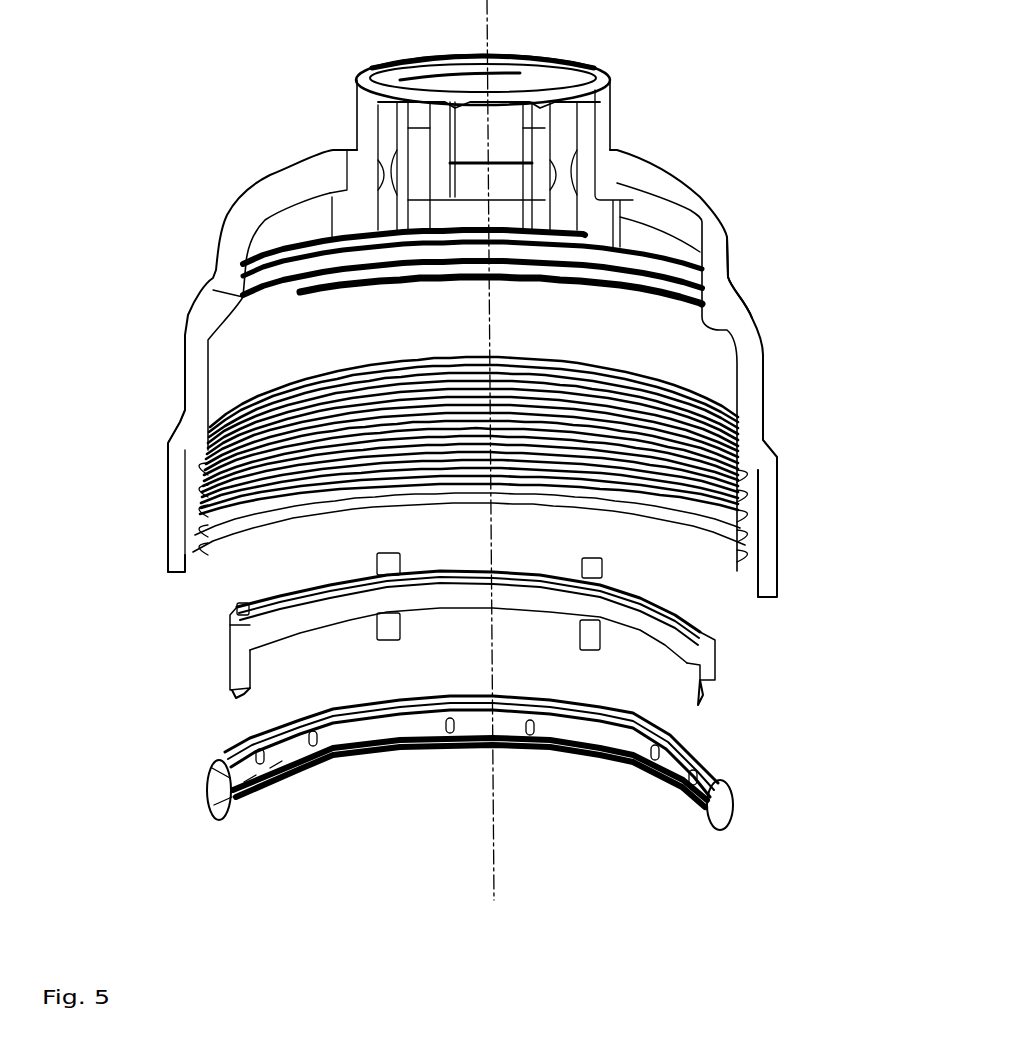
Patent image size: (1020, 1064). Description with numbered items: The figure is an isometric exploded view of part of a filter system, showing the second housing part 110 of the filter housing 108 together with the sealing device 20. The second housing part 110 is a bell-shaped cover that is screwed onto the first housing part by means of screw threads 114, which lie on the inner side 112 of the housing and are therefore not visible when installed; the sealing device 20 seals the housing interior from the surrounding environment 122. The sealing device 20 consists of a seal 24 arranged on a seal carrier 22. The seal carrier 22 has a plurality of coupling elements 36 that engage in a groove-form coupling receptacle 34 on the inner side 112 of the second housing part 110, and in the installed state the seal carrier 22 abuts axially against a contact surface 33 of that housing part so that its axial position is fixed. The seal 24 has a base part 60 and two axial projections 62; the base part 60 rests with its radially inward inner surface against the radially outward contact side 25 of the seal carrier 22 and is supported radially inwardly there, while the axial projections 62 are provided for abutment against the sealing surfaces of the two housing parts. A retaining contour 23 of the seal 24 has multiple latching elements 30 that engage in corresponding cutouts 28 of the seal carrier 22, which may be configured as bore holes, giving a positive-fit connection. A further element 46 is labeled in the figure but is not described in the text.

The filter housing 108 is at (848, 254).
The second housing part 110 is at (742, 280).
The inner side 112 is at (430, 326).
The screw threads 114 is at (748, 543).
The surrounding environment 122 is at (72, 526).
The coupling receptacle 34 is at (228, 292).
The contact surface 33 is at (237, 300).
The sealing device 20 is at (138, 690).
The seal carrier 22 is at (367, 603).
The seal 24 is at (212, 782).
The contact side 25 is at (233, 632).
The cutouts 28 is at (230, 636).
The coupling elements 36 is at (242, 610).
The hook 46 is at (243, 692).
The retaining contour 23 is at (287, 777).
The latching elements 30 is at (287, 777).
The base part 60 is at (208, 800).
The axial projections 62 is at (213, 770).